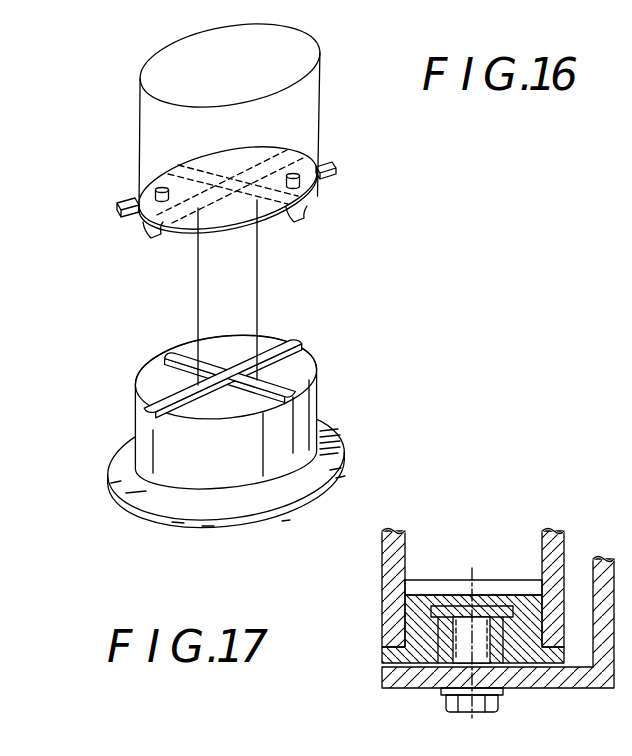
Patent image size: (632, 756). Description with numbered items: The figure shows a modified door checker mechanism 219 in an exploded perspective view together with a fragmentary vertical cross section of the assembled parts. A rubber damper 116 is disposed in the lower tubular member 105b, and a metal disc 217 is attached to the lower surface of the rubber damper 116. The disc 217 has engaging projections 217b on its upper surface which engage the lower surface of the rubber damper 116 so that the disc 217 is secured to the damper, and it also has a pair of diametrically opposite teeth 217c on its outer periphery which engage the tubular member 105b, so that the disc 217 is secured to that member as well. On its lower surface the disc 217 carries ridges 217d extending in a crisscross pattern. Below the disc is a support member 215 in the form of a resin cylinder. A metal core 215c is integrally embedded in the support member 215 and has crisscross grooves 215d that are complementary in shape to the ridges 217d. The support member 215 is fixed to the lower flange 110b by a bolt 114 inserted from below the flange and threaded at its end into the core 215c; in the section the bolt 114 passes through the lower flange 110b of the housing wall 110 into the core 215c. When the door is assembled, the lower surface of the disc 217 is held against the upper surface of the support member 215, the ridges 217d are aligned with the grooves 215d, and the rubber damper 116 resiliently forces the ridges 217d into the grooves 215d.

In FIG. 16, the rubber damper 116 is at (320, 90).
In FIG. 16, the disc 217 is at (313, 203).
In FIG. 16, the engaging projections 217b is at (297, 178).
In FIG. 16, the teeth 217c is at (337, 171).
In FIG. 16, the ridges 217d is at (299, 225).
In FIG. 16, the support member 215 is at (318, 400).
In FIG. 17, the support member 215 is at (413, 629).
In FIG. 16, the crisscross grooves 215d is at (296, 342).
In FIG. 17, the crisscross grooves 215d is at (433, 583).
In FIG. 17, the metal core 215c is at (492, 605).
In FIG. 17, the housing wall 110 is at (596, 584).
In FIG. 17, the lower flange 110b is at (535, 688).
In FIG. 17, the lower tubular member 105b is at (382, 558).
In FIG. 17, the bolt 114 is at (463, 714).
In FIG. 17, the door checker mechanism 219 is at (366, 690).